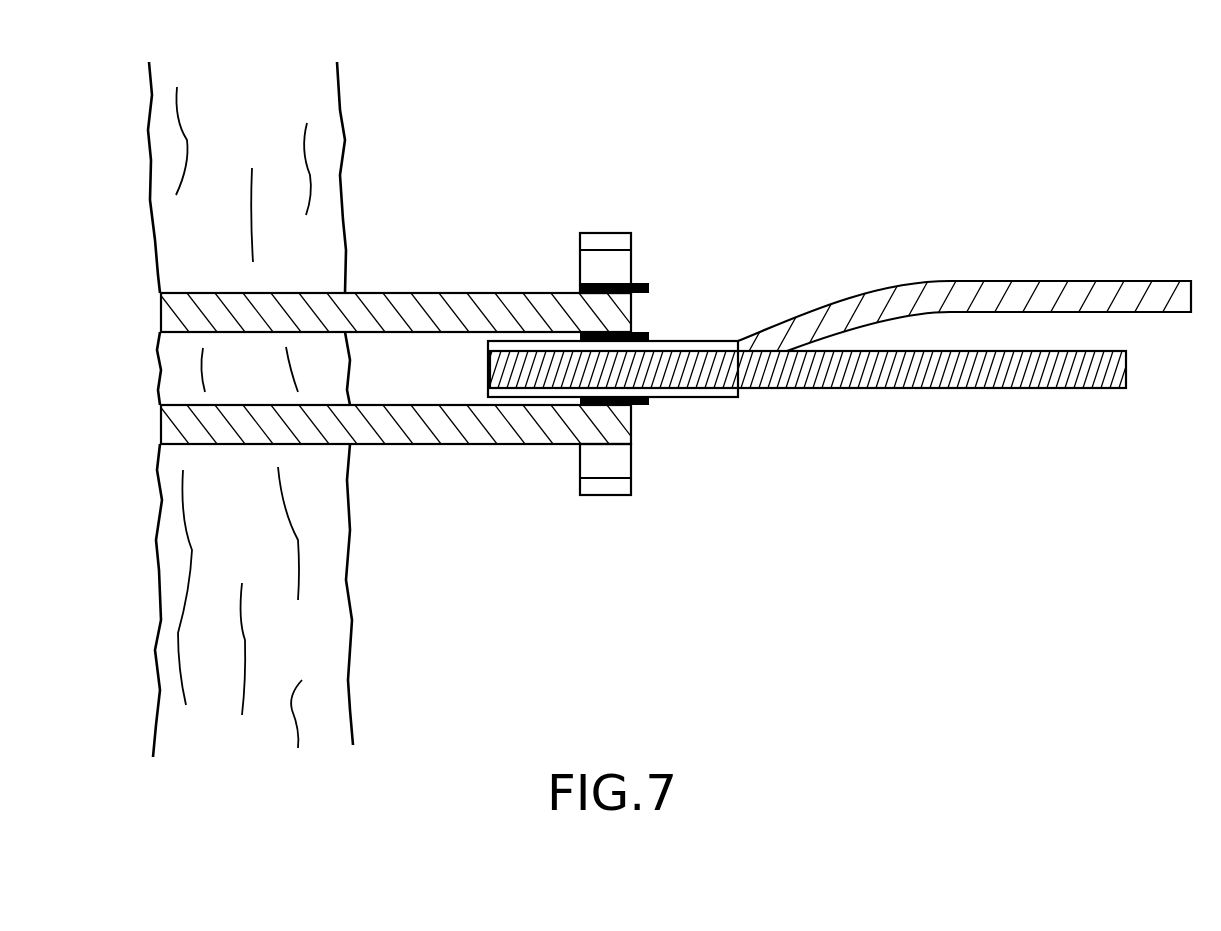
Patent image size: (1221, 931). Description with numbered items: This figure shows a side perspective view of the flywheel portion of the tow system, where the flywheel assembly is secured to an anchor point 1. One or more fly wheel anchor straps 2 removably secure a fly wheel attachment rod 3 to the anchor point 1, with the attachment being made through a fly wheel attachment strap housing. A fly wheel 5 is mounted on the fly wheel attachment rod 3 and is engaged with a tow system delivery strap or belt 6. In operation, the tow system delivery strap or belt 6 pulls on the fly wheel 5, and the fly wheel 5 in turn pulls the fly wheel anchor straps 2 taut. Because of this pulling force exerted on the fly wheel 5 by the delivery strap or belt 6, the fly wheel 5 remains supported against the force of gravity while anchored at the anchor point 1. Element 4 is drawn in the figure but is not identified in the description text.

The anchor point 1 is at (240, 125).
The fly wheel anchor straps 2 is at (437, 293).
The fly wheel attachment rod 3 is at (614, 233).
The sealing ring 4 is at (643, 332).
The fly wheel 5 is at (710, 341).
The tow system delivery strap or belt 6 is at (918, 283).